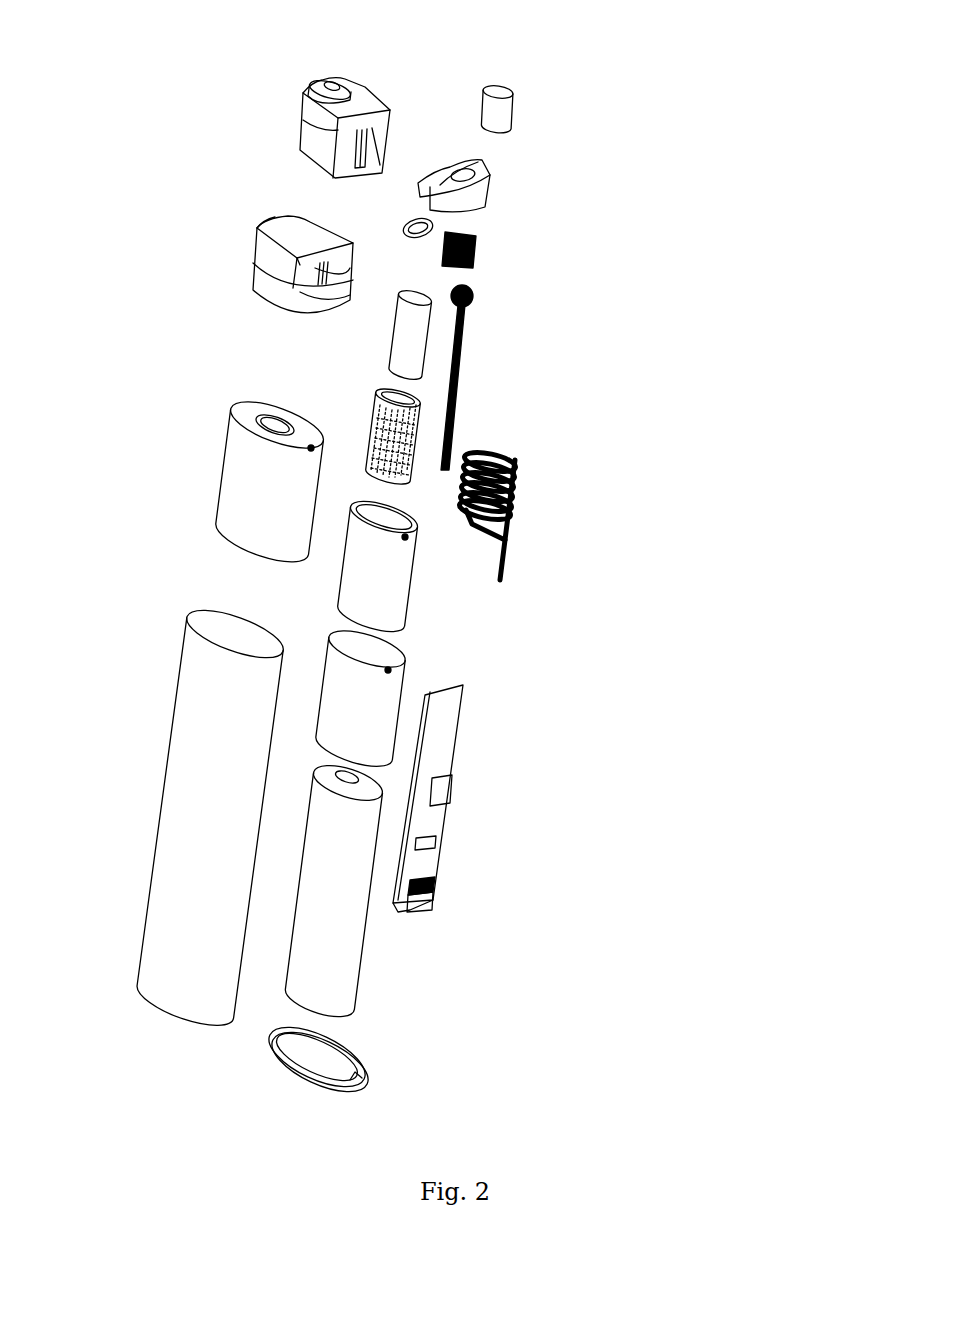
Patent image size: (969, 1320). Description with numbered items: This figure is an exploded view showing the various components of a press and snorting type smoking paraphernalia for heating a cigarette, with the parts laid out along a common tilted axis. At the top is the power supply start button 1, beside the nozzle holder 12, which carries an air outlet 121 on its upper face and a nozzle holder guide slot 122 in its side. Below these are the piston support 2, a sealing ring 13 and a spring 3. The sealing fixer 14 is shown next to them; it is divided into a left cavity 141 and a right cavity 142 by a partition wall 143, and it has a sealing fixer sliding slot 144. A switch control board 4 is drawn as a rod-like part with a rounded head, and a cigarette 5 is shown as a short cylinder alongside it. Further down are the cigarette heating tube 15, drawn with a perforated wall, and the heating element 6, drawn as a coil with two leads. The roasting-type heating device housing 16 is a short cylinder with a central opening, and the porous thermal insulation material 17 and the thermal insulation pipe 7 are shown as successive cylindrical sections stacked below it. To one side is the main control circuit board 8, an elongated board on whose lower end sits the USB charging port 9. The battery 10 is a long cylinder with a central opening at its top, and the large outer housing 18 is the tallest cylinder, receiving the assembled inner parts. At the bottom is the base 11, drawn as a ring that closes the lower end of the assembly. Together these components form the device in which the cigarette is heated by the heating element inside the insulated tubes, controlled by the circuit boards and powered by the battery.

The power supply start button 1 is at (518, 107).
The piston support 2 is at (466, 200).
The spring 3 is at (480, 250).
The switch control board 4 is at (470, 312).
The cigarette 5 is at (418, 368).
The heating element 6 is at (515, 499).
The thermal insulation pipe 7 is at (405, 663).
The main control circuit board 8 is at (527, 798).
The USB charging port 9 is at (425, 898).
The battery 10 is at (345, 982).
The base 11 is at (368, 1067).
The nozzle holder 12 is at (266, 103).
The air outlet 121 is at (318, 80).
The nozzle holder guide slot 122 is at (385, 143).
The sealing ring 13 is at (405, 222).
The sealing fixer 14 is at (243, 298).
The left cavity 141 is at (270, 222).
The right cavity 142 is at (327, 305).
The partition wall 143 is at (310, 263).
The sealing fixer sliding slot 144 is at (323, 263).
The cigarette heating tube 15 is at (375, 437).
The roasting-type heating device housing 16 is at (215, 497).
The porous thermal insulation material 17 is at (340, 577).
The housing 18 is at (157, 893).